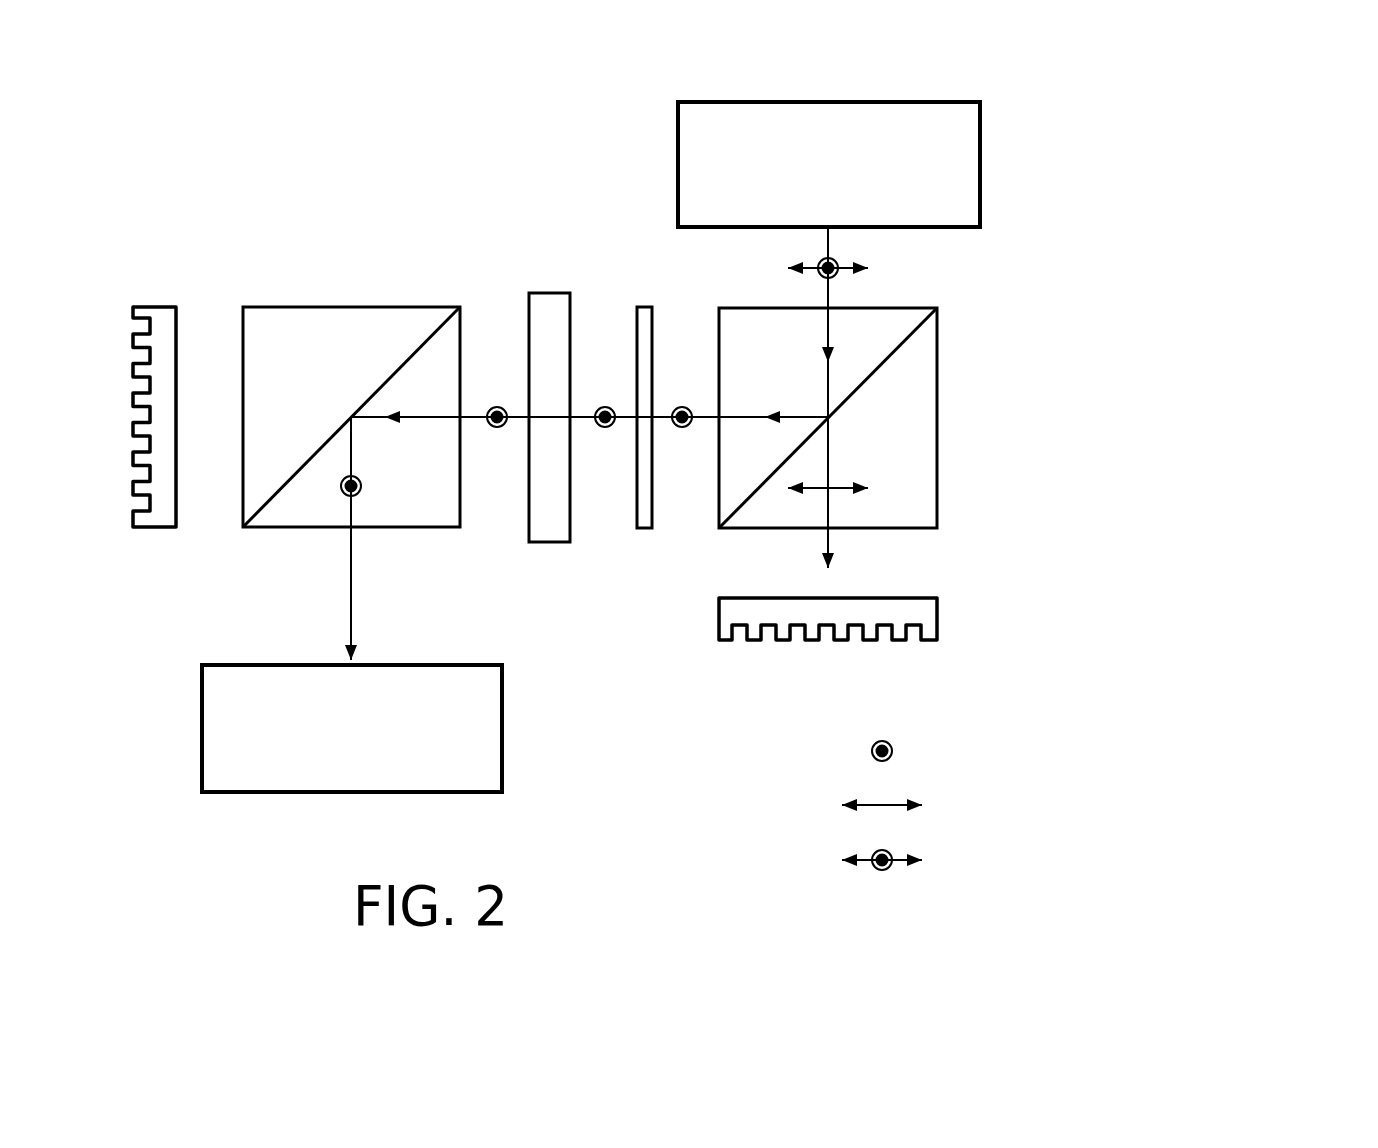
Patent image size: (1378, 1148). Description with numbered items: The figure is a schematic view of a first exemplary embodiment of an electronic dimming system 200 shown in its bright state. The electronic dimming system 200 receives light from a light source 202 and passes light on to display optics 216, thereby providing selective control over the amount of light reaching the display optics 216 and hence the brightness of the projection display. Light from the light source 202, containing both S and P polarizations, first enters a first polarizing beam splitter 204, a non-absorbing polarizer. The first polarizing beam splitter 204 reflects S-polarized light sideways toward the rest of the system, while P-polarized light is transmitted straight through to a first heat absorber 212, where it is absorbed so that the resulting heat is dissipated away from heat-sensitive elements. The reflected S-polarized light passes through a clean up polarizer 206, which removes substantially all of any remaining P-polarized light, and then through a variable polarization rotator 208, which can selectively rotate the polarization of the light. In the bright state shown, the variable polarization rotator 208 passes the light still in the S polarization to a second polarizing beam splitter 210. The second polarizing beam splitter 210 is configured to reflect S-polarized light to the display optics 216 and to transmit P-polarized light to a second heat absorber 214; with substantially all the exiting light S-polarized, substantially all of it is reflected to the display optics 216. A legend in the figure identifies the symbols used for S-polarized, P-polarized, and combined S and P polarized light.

The electronic dimming system 200 is at (163, 582).
The light source 202 is at (858, 100).
The first polarizing beam splitter 204 is at (937, 405).
The clean up polarizer 206 is at (650, 307).
The variable polarization rotator 208 is at (548, 293).
The second polarizing beam splitter 210 is at (355, 307).
The first heat absorber 212 is at (937, 622).
The second heat absorber 214 is at (150, 307).
The display optics 216 is at (505, 758).